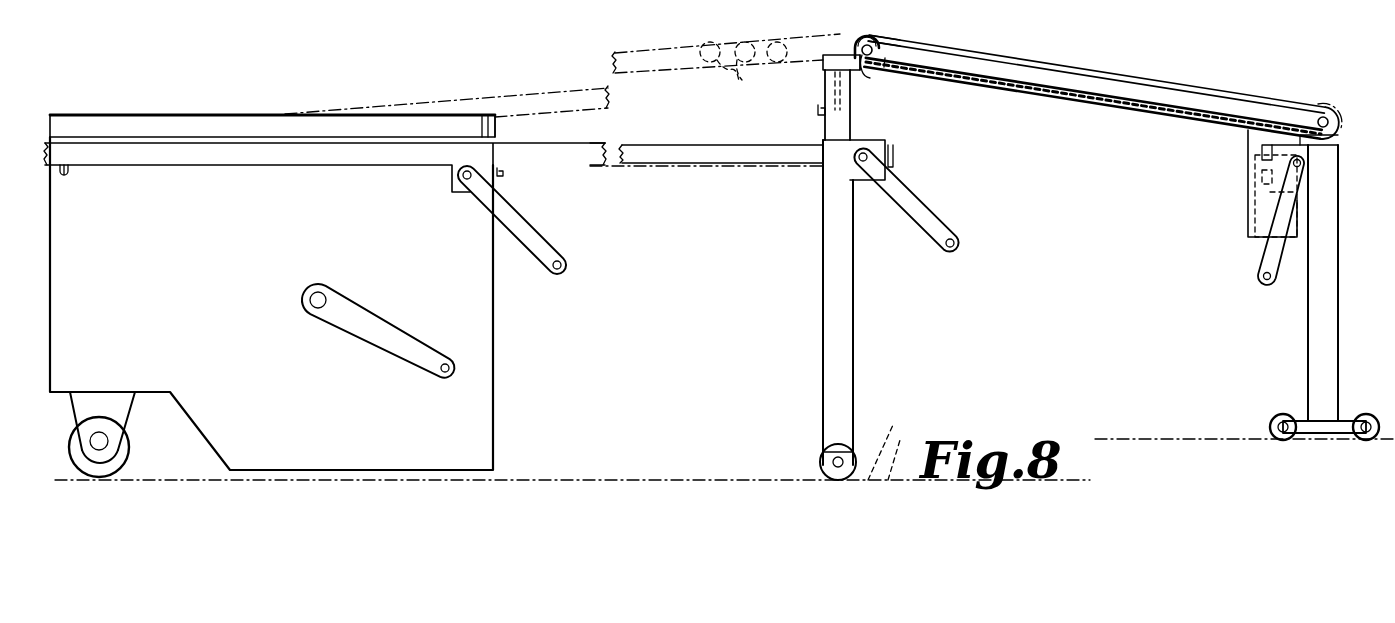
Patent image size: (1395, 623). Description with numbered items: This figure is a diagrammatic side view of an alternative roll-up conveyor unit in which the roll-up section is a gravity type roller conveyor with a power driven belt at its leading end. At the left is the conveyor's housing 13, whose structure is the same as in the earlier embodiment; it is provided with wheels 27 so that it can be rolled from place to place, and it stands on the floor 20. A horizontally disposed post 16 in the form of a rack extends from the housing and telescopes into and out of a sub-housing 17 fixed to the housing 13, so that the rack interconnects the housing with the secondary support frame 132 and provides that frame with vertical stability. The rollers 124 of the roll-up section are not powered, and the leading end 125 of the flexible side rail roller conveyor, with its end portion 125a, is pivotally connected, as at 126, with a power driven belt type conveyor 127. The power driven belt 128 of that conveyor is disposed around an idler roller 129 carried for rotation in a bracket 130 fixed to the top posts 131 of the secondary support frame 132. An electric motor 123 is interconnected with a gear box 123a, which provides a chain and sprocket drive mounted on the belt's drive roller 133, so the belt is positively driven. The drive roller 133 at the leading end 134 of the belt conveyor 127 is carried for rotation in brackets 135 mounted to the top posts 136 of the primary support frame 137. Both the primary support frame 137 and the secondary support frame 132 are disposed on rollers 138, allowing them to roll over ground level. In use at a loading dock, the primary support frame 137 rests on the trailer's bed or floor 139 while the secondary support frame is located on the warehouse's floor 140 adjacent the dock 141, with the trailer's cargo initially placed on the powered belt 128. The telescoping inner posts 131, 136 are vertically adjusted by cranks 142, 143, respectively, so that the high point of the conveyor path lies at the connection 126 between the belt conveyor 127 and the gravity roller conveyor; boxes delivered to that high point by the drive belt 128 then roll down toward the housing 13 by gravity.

The housing 13 is at (506, 317).
The post 16 is at (643, 140).
The sub-housing 17 is at (255, 106).
The floor 20 is at (152, 477).
The wheels 27 is at (128, 446).
The electric motor 123 is at (1240, 230).
The gear box 123a is at (1255, 178).
The rollers 124 is at (742, 79).
The leading end 125 is at (850, 40).
The hinge loop 125a is at (873, 36).
The pivotal connection 126 is at (898, 46).
The power driven belt type conveyor 127 is at (1083, 112).
The power driven belt 128 is at (1118, 72).
The idler roller 129 is at (863, 62).
The bracket 130 is at (828, 61).
The top posts 131 is at (855, 126).
The secondary support frame 132 is at (818, 272).
The drive roller 133 is at (1333, 113).
The leading end 134 is at (1325, 105).
The brackets 135 is at (1338, 138).
The top posts 136 is at (1330, 152).
The primary support frame 137 is at (1340, 273).
The rollers 138 is at (1262, 418).
The trailer's bed or floor 139 is at (1150, 437).
The warehouse's floor 140 is at (896, 440).
The dock 141 is at (908, 452).
The crank 142 is at (952, 236).
The crank 143 is at (1272, 284).